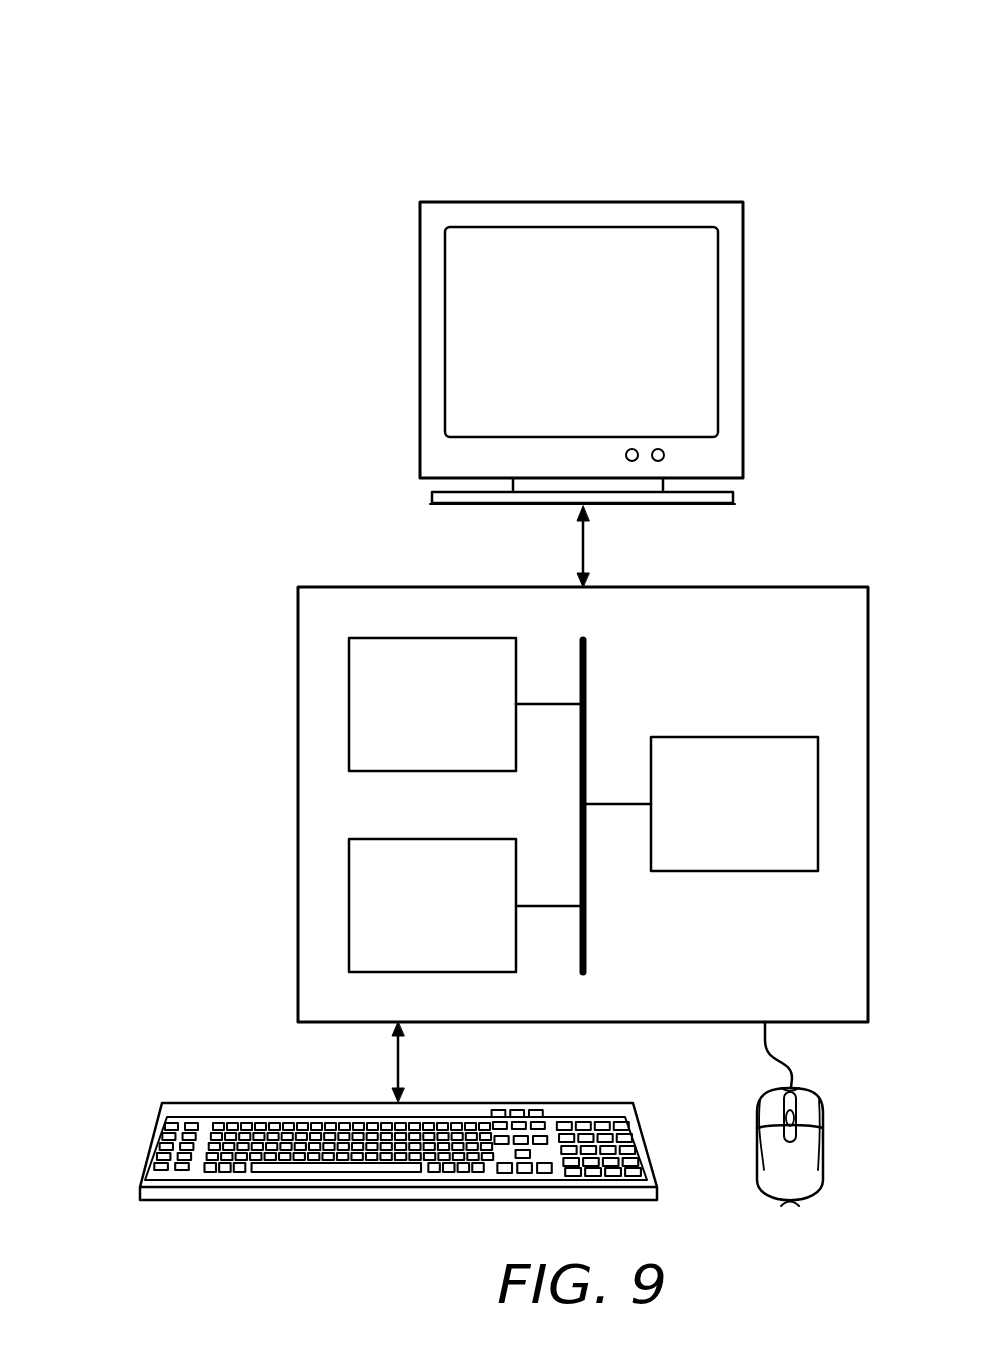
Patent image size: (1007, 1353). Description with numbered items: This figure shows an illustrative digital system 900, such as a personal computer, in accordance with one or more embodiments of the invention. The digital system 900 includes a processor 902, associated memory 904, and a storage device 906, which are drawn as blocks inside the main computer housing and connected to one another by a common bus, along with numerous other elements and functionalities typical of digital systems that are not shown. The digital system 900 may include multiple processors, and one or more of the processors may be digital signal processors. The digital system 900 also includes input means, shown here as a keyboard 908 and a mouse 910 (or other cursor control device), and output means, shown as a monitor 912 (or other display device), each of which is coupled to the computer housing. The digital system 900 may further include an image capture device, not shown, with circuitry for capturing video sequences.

The digital system 900 is at (786, 93).
The processor 902 is at (703, 824).
The memory 904 is at (401, 725).
The storage device 906 is at (401, 926).
The keyboard 908 is at (148, 1143).
The mouse 910 is at (823, 1153).
The monitor 912 is at (557, 200).